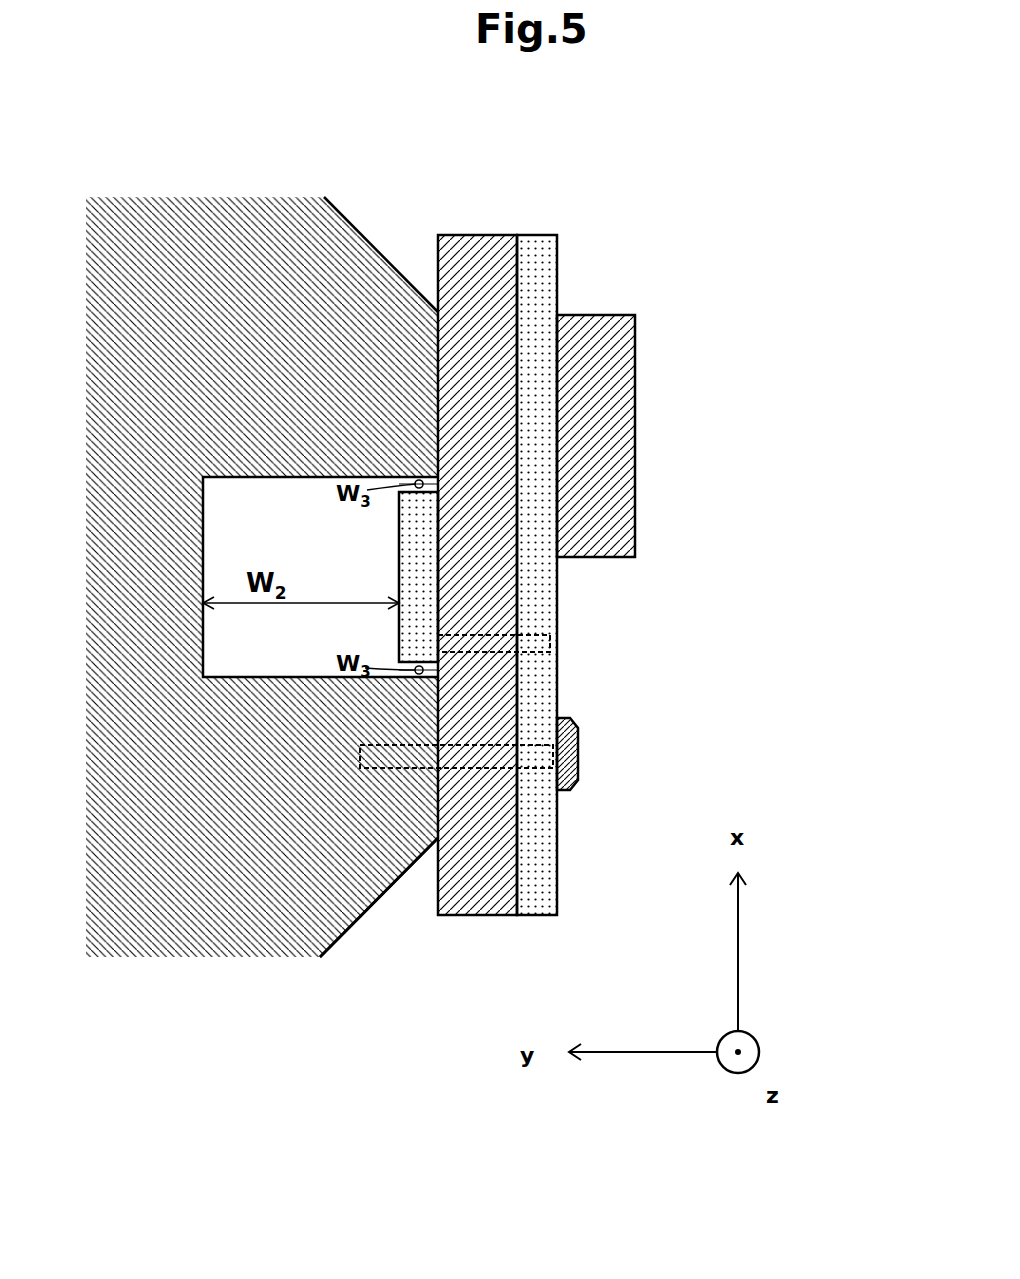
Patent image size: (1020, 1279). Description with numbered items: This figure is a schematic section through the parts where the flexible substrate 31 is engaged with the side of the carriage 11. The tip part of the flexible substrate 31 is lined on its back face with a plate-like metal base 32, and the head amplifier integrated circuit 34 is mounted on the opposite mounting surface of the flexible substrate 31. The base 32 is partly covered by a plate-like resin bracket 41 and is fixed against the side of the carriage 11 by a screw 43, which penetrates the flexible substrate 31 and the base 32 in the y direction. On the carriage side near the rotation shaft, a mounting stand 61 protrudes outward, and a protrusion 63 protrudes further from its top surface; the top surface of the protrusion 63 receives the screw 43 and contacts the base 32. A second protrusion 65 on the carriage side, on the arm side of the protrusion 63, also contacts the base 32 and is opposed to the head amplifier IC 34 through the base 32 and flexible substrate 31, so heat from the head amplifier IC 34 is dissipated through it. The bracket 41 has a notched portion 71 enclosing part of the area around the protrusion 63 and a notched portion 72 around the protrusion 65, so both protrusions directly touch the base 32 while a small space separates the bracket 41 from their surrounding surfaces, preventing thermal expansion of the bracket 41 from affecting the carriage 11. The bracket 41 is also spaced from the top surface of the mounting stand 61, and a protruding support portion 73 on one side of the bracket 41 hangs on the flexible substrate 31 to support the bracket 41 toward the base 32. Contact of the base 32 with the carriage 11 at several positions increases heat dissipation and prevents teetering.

The carriage 11 is at (222, 210).
The flexible substrate 31 is at (537, 247).
The base 32 is at (481, 247).
The head amplifier integrated circuit 34 is at (620, 428).
The bracket 41 is at (408, 550).
The screw 43 is at (578, 757).
The mounting stand 61 is at (378, 937).
The protrusion 63 is at (403, 870).
The protrusion 65 is at (380, 257).
The notched portion 71 is at (398, 662).
The notched portion 72 is at (397, 490).
The support portion 73 is at (528, 635).